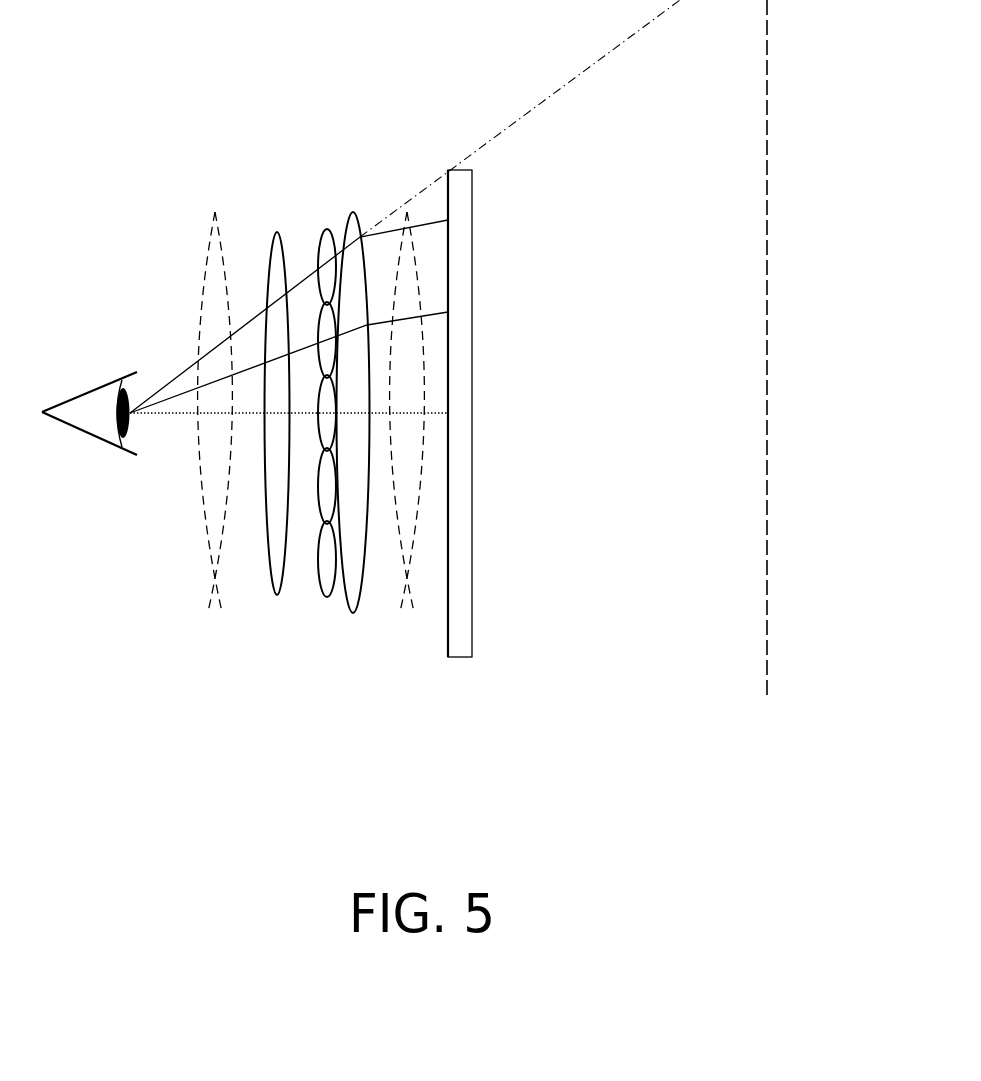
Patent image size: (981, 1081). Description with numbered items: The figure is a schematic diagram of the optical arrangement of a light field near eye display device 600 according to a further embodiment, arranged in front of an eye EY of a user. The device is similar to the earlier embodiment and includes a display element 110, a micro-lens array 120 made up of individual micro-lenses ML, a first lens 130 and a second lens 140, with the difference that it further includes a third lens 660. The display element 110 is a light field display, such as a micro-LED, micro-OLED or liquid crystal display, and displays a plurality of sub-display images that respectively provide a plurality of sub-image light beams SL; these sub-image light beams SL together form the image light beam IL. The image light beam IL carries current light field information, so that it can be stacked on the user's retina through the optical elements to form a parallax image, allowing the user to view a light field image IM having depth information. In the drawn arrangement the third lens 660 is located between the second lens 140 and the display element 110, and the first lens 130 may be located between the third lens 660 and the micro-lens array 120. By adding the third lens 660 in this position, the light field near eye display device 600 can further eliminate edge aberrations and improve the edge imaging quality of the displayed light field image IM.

The display element 110 is at (463, 638).
The micro-lens array 120 is at (326, 583).
The first lens 130 is at (277, 582).
The second lens 140 is at (357, 598).
The third lens 660 is at (205, 604).
The light field near eye display device 600 is at (95, 765).
The eye EY is at (91, 389).
The image light beam IL is at (165, 386).
The micro-lens ML is at (325, 258).
The sub-image light beam SL is at (449, 221).
The light field image IM is at (768, 670).